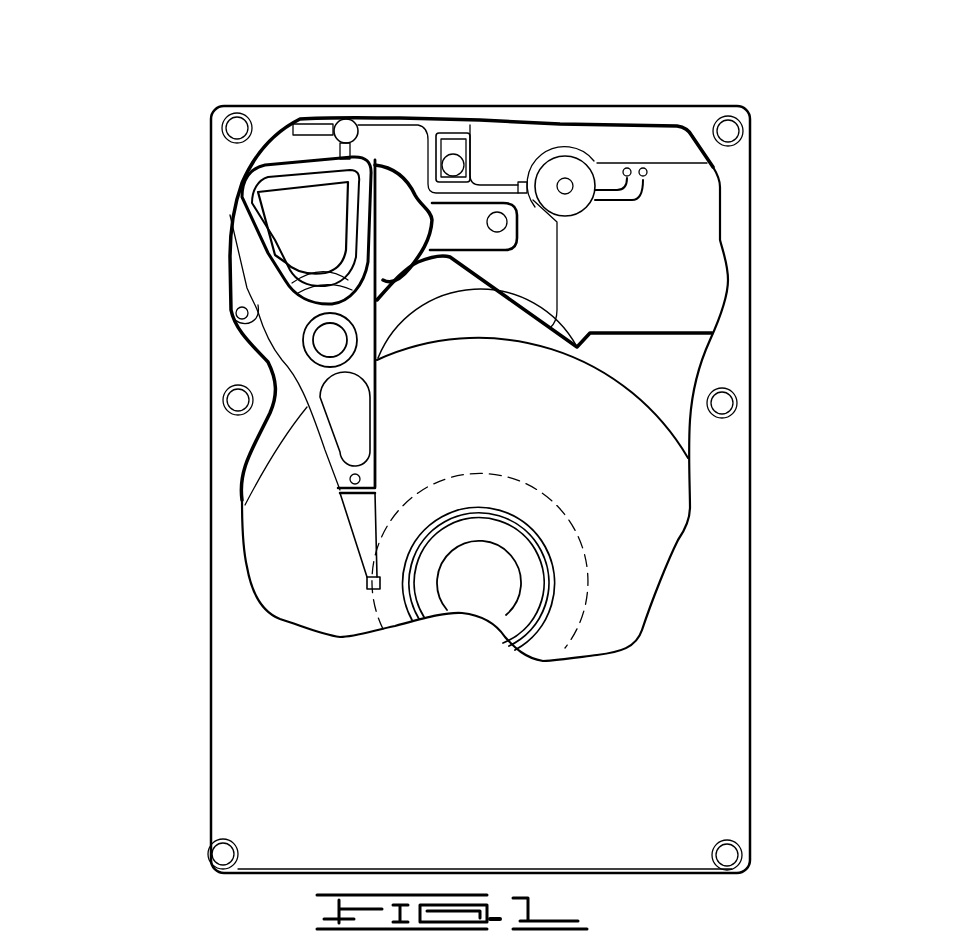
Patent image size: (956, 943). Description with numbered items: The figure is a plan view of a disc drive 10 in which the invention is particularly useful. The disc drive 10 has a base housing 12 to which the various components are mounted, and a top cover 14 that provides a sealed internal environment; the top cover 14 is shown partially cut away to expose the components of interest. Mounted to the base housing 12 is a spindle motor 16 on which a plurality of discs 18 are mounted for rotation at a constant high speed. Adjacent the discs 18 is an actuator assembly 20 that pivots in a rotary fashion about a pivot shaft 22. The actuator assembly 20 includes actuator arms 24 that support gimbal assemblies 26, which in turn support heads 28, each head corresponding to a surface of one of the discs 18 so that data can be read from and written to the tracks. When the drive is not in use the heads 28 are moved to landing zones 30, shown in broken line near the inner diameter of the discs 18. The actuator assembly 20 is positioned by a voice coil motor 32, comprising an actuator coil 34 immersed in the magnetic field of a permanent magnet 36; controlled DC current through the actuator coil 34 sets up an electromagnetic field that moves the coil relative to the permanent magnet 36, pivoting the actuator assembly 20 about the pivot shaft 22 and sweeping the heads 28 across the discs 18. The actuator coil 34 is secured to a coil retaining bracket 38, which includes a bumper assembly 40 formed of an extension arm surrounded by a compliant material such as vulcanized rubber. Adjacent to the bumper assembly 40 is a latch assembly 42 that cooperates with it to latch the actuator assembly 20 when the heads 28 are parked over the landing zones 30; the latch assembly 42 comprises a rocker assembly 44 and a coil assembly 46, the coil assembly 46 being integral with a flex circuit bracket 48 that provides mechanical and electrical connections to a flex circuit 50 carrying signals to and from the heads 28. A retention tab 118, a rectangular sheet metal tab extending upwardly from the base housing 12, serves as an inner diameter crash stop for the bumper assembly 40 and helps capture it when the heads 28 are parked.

The disc drive 10 is at (200, 62).
The base housing 12 is at (268, 430).
The top cover 14 is at (253, 700).
The spindle motor 16 is at (476, 572).
The discs 18 is at (673, 495).
The actuator assembly 20 is at (297, 330).
The pivot shaft 22 is at (330, 345).
The actuator arms 24 is at (340, 475).
The gimbal assemblies 26 is at (360, 527).
The heads 28 is at (368, 583).
The landing zones 30 is at (440, 483).
The voice coil motor 32 is at (205, 185).
The actuator coil 34 is at (267, 242).
The permanent magnet 36 is at (393, 233).
The coil retaining bracket 38 is at (245, 181).
The bumper assembly 40 is at (347, 118).
The latch assembly 42 is at (527, 97).
The rocker assembly 44 is at (480, 147).
The coil assembly 46 is at (578, 178).
The flex circuit bracket 48 is at (717, 233).
The flex circuit 50 is at (509, 307).
The retention tab 118 is at (308, 124).